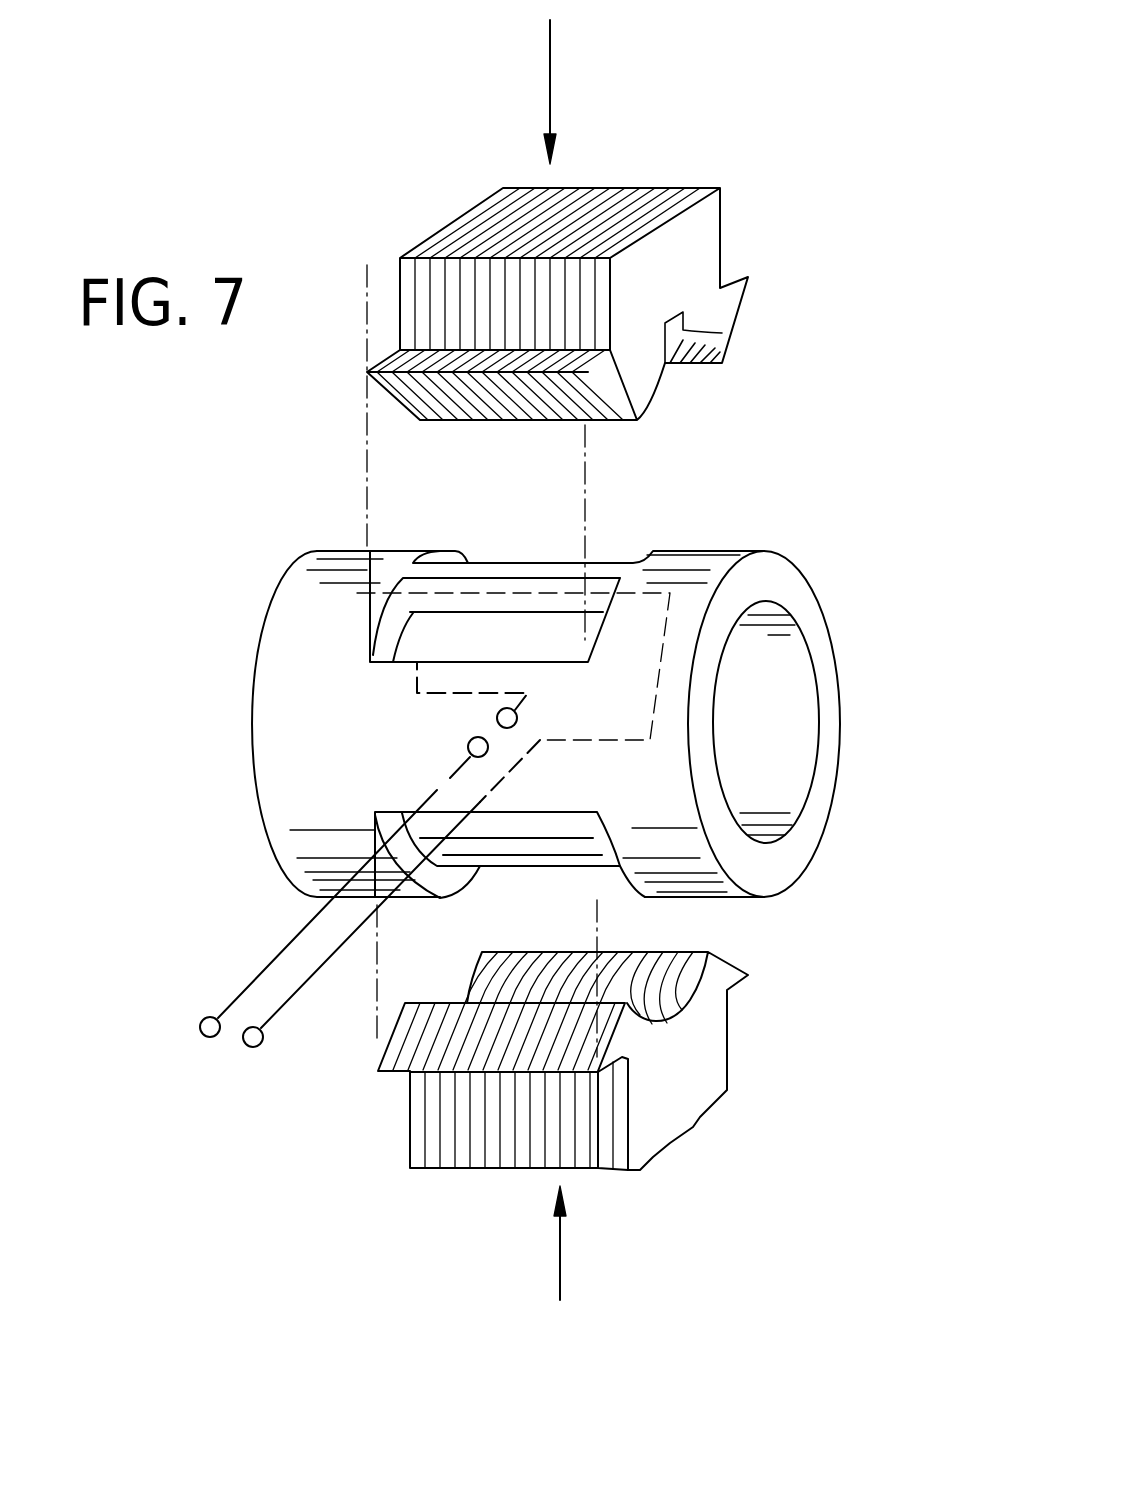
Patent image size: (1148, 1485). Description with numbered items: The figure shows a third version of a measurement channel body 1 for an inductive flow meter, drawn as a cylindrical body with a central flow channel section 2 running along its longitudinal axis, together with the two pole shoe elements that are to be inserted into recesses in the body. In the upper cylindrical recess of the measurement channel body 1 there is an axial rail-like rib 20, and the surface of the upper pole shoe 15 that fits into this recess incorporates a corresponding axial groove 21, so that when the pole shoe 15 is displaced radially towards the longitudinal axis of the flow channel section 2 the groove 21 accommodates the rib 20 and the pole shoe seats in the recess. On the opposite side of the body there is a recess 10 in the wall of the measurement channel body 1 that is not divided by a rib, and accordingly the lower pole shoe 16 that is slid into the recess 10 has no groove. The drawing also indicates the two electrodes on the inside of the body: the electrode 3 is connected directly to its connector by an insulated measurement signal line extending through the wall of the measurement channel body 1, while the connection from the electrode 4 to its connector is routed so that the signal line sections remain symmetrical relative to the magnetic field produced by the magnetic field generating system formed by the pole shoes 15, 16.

The measurement channel body 1 is at (813, 645).
The flow channel section 2 is at (775, 733).
The electrode 3 is at (466, 744).
The electrode 4 is at (519, 716).
The recess 10 is at (567, 847).
The pole shoe 15 is at (697, 242).
The pole shoe 16 is at (698, 1090).
The axial rail-like rib 20 is at (510, 570).
The axial groove 21 is at (687, 327).